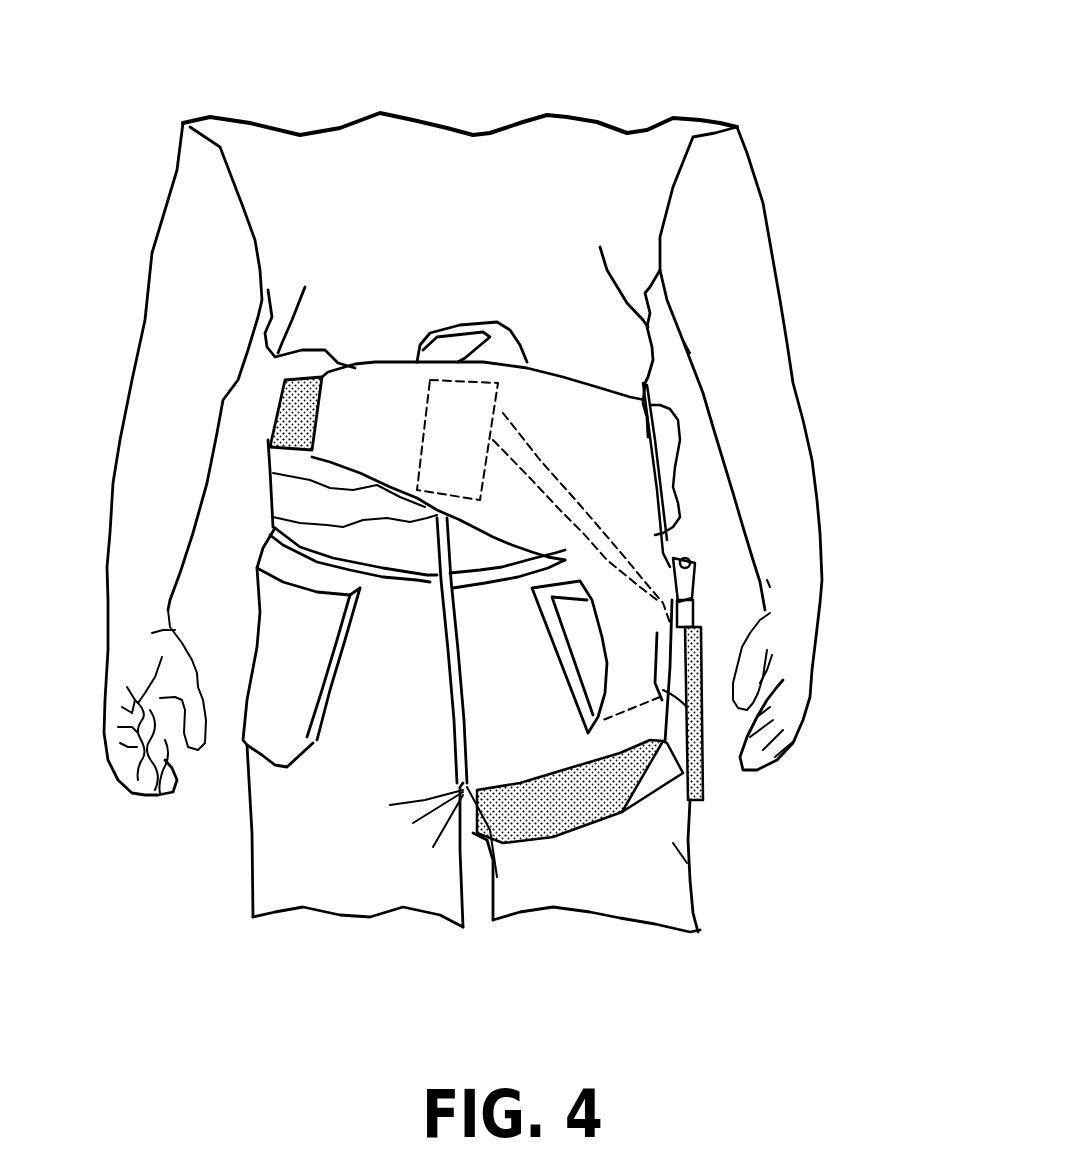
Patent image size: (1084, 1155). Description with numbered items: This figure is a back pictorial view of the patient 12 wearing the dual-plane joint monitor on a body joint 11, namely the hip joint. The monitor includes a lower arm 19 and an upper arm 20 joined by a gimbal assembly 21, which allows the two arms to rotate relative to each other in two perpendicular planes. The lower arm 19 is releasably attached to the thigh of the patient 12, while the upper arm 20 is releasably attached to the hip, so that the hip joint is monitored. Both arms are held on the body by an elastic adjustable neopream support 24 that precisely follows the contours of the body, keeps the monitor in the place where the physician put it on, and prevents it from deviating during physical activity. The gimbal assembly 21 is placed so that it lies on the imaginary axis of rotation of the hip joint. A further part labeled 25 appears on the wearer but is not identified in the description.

The body joint 11 is at (692, 813).
The patient 12 is at (583, 170).
The lower arm 19 is at (693, 603).
The upper arm 20 is at (680, 520).
The gimbal assembly 21 is at (693, 565).
The neopream support 24 is at (593, 523).
The strap end pad 25 is at (705, 780).